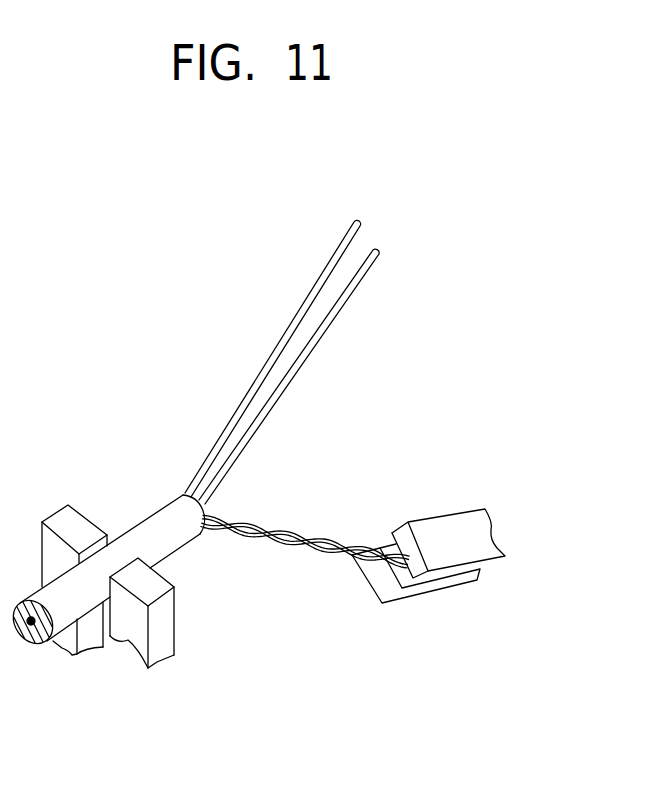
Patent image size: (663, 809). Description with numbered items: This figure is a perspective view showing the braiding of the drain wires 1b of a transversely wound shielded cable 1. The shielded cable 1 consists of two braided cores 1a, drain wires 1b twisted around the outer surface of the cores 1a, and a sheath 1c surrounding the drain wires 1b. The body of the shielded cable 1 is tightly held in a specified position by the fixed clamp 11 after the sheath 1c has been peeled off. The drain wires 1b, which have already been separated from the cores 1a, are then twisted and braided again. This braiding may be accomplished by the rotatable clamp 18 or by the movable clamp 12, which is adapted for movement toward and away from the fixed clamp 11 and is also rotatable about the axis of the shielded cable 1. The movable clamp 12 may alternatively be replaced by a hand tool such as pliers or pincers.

The shielded cable 1 is at (207, 437).
The cores 1a is at (280, 362).
The drain wires 1b is at (262, 530).
The sheath 1c is at (147, 520).
The fixed clamp 11 is at (130, 643).
The movable clamp 12 is at (491, 567).
The rotatable clamp 18 is at (455, 590).